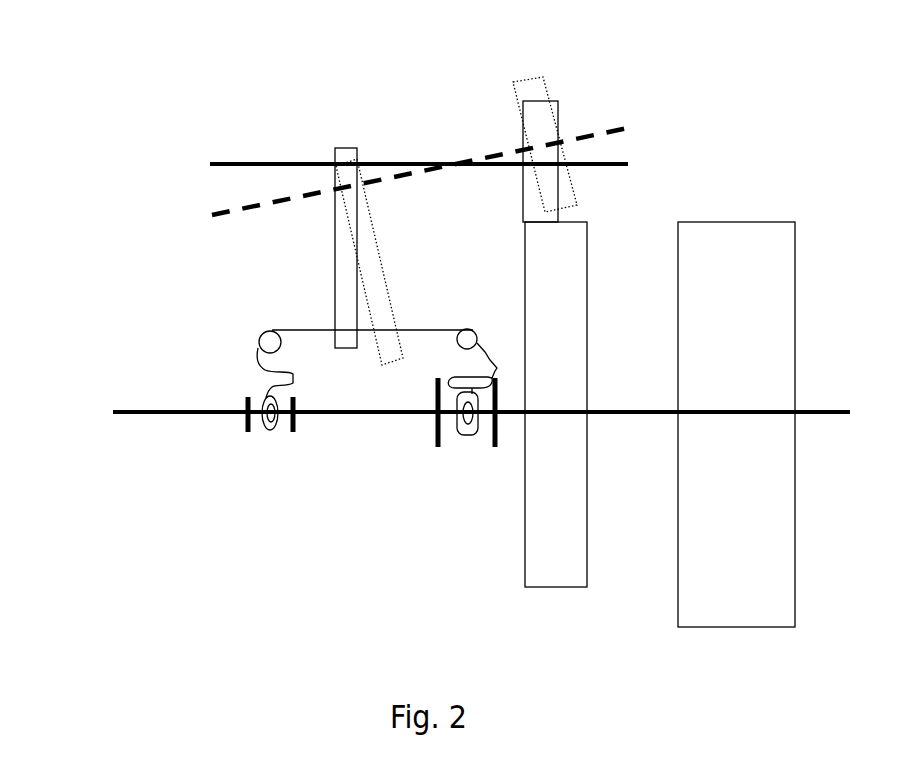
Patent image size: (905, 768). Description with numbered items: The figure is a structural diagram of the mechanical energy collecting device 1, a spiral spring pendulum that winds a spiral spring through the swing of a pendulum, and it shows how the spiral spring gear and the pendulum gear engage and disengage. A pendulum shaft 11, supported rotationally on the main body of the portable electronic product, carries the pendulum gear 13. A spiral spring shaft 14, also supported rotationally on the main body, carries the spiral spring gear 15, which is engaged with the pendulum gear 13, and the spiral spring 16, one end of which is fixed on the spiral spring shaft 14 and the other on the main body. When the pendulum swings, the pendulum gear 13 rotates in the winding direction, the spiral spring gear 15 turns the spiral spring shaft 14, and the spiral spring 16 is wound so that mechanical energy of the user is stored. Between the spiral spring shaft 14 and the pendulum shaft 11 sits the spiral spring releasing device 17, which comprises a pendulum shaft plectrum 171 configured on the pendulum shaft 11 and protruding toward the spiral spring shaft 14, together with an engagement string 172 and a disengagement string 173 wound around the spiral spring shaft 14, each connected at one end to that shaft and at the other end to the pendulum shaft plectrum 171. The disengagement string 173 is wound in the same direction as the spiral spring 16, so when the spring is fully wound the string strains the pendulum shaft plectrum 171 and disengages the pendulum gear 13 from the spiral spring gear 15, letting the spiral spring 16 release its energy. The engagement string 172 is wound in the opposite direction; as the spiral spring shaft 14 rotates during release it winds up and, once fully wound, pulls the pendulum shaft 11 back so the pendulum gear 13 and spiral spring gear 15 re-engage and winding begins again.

The mechanical energy collecting device 1 is at (157, 200).
The pendulum shaft 11 is at (414, 143).
The pendulum gear 13 is at (680, 124).
The spiral spring shaft 14 is at (347, 418).
The spiral spring gear 15 is at (598, 441).
The spiral spring 16 is at (737, 358).
The spiral spring releasing device 17 is at (259, 348).
The pendulum shaft plectrum 171 is at (322, 313).
The engagement string 172 is at (253, 387).
The disengagement string 173 is at (463, 430).